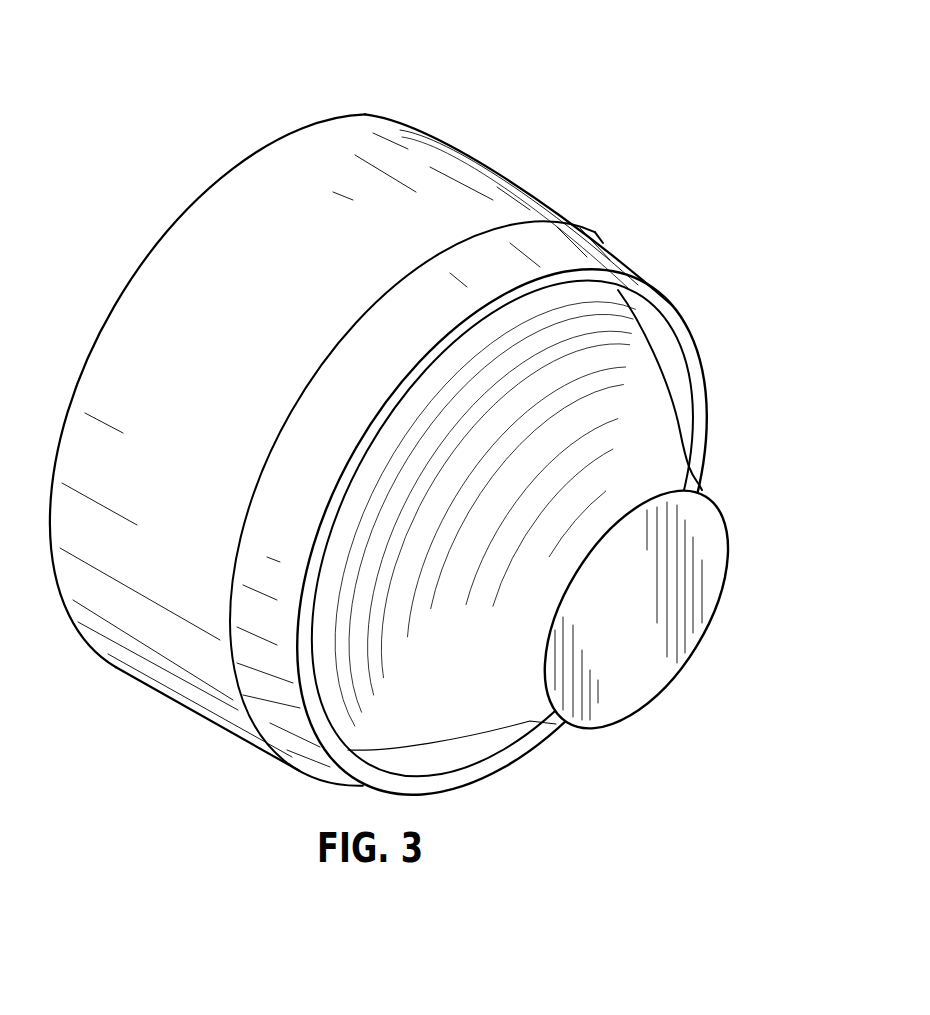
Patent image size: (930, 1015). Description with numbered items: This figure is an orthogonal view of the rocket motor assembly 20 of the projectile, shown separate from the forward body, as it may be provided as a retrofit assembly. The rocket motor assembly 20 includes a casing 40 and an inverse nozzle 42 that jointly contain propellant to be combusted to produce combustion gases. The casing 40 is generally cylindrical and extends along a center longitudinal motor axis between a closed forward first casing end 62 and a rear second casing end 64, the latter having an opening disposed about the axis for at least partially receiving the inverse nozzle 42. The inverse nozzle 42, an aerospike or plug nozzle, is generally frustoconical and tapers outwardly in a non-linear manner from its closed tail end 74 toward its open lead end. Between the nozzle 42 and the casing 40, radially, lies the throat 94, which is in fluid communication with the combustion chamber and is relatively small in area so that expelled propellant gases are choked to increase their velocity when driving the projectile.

The rocket motor assembly 20 is at (421, 441).
The casing 40 is at (361, 401).
The inverse nozzle 42 is at (687, 466).
The first casing end 62 is at (359, 106).
The second casing end 64 is at (501, 532).
The tail end 74 is at (735, 548).
The throat 94 is at (432, 773).